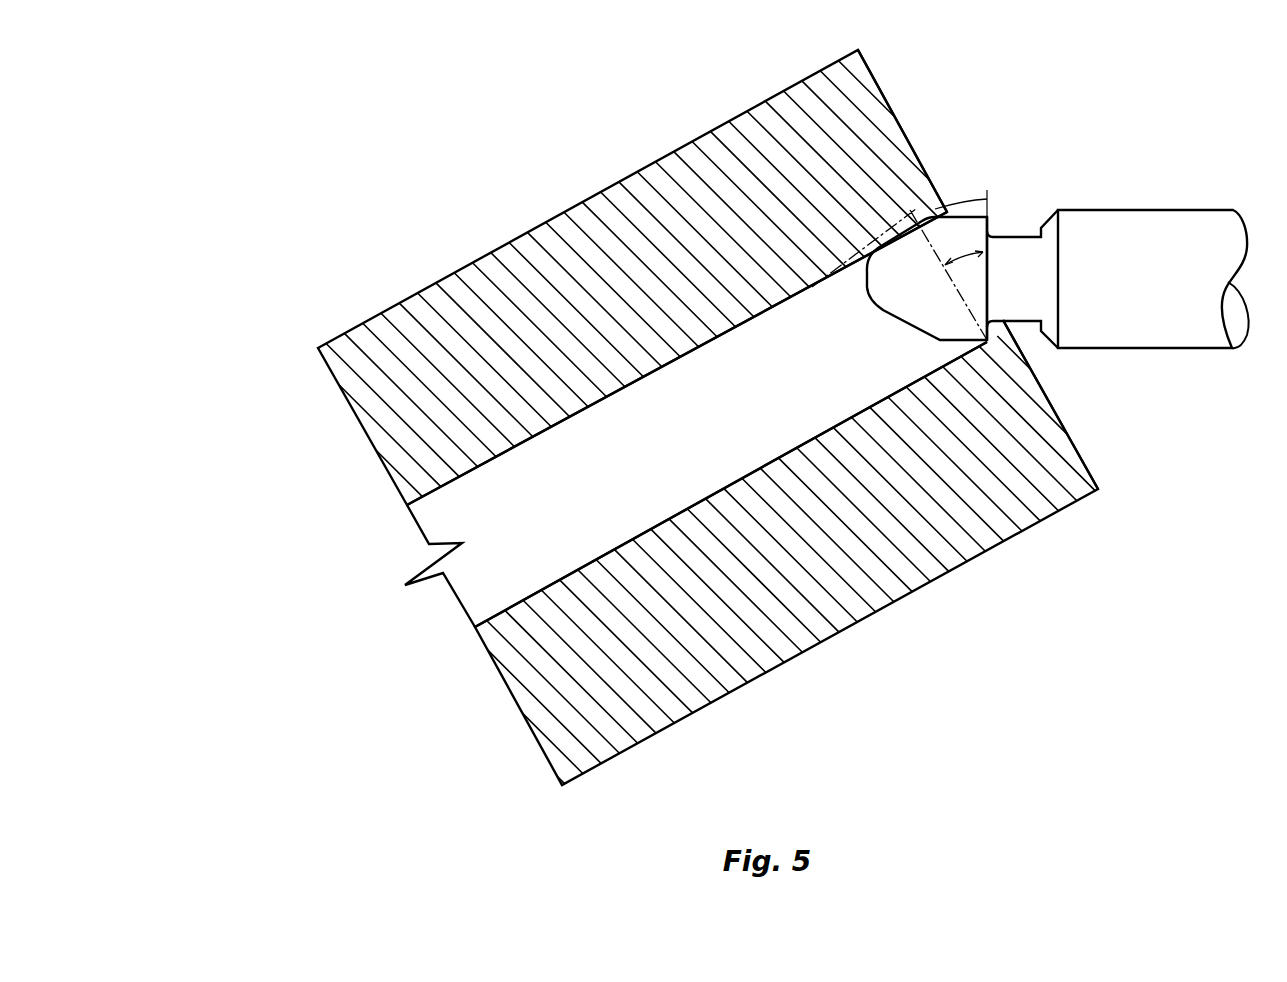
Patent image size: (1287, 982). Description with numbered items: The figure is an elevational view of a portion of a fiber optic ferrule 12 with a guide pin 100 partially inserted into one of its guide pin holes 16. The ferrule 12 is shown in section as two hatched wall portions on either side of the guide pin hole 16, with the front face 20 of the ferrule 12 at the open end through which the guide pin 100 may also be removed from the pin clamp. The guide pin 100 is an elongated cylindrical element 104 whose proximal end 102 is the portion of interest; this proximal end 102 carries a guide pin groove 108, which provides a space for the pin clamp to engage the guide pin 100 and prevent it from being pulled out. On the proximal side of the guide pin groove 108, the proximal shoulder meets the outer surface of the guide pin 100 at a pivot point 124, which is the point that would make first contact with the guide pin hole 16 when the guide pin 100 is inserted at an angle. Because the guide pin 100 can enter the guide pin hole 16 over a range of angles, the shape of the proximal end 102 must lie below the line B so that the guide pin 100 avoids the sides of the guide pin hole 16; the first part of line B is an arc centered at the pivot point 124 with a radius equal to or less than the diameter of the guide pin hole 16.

The fiber optic ferrule 12 is at (1040, 522).
The guide pin hole 16 is at (627, 480).
The front face 20 is at (1092, 467).
The guide pin 100 is at (1058, 258).
The proximal end 102 is at (991, 228).
The elongated cylindrical element 104 is at (1217, 210).
The guide pin groove 108 is at (1017, 237).
The pivot point 124 is at (998, 325).
The line B is at (967, 200).